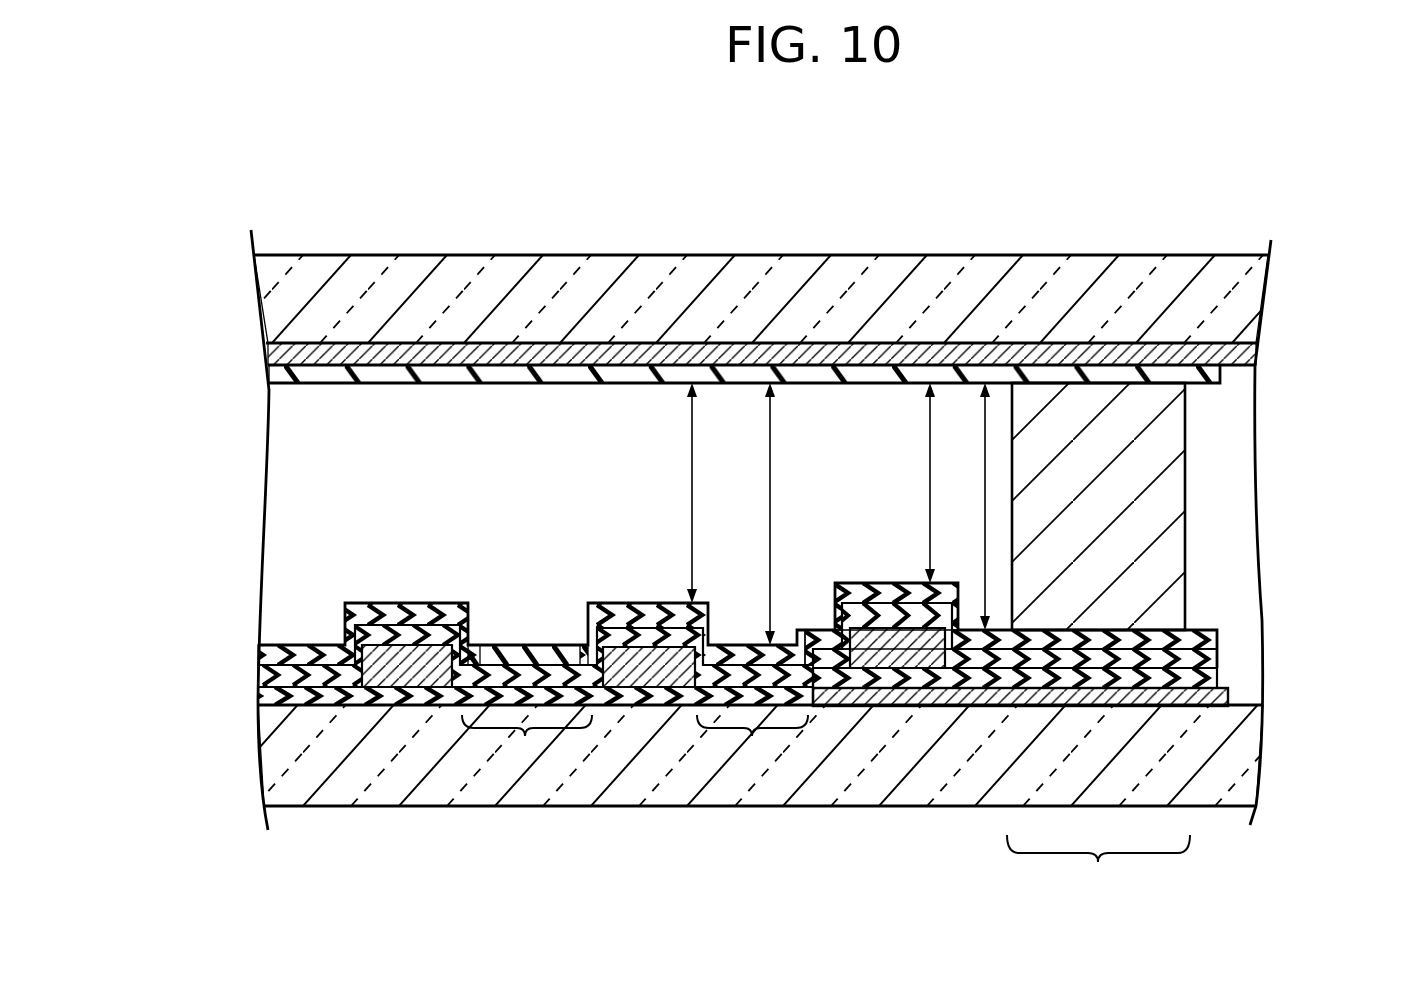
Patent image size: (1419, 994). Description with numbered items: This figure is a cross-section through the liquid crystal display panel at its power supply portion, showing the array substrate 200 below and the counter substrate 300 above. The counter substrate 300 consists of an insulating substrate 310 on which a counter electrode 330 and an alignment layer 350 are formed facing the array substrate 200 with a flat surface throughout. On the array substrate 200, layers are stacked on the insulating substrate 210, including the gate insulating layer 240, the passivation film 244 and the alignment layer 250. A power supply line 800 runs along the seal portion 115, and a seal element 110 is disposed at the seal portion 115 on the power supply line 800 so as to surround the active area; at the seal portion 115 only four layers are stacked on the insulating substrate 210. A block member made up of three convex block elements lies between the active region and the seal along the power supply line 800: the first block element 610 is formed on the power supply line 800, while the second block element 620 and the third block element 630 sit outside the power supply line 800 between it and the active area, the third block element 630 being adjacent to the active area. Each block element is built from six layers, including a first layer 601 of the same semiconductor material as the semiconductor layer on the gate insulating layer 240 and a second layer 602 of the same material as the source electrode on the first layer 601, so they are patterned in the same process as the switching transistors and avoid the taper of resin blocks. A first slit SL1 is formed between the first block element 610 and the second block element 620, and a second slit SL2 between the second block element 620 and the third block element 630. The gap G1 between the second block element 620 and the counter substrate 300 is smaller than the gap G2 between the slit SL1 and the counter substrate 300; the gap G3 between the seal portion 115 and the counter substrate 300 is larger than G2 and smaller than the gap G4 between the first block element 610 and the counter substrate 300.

The counter substrate 300 is at (796, 506).
The insulating substrate 310 is at (278, 299).
The counter electrode 330 is at (272, 354).
The alignment layer 350 is at (272, 376).
The seal element 110 is at (1103, 425).
The seal portion 115 is at (1098, 866).
The array substrate 200 is at (778, 693).
The insulating substrate 210 is at (272, 761).
The gate insulating layer 240 is at (268, 698).
The passivation film 244 is at (268, 677).
The alignment layer 250 is at (268, 653).
The power supply line 800 is at (1228, 697).
The third block element 630 is at (432, 690).
The second block element 620 is at (680, 690).
The first block element 610 is at (910, 680).
The first layer 601 is at (385, 650).
The second layer 602 is at (413, 645).
The first slit SL1 is at (752, 738).
The second slit SL2 is at (525, 738).
The gap G1 is at (690, 440).
The gap G2 is at (767, 440).
The gap G3 is at (983, 450).
The gap G4 is at (927, 440).